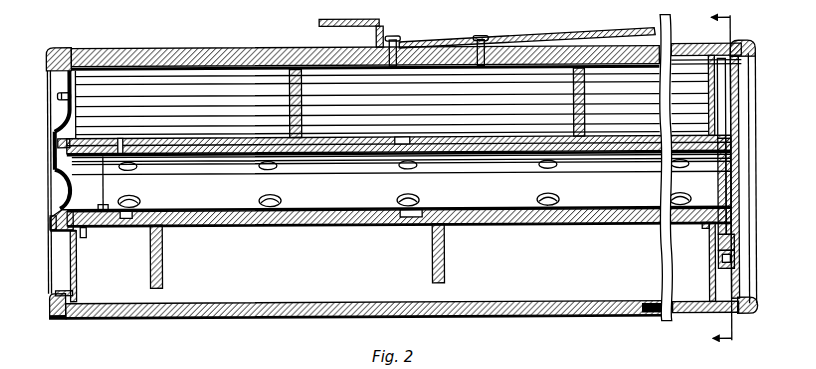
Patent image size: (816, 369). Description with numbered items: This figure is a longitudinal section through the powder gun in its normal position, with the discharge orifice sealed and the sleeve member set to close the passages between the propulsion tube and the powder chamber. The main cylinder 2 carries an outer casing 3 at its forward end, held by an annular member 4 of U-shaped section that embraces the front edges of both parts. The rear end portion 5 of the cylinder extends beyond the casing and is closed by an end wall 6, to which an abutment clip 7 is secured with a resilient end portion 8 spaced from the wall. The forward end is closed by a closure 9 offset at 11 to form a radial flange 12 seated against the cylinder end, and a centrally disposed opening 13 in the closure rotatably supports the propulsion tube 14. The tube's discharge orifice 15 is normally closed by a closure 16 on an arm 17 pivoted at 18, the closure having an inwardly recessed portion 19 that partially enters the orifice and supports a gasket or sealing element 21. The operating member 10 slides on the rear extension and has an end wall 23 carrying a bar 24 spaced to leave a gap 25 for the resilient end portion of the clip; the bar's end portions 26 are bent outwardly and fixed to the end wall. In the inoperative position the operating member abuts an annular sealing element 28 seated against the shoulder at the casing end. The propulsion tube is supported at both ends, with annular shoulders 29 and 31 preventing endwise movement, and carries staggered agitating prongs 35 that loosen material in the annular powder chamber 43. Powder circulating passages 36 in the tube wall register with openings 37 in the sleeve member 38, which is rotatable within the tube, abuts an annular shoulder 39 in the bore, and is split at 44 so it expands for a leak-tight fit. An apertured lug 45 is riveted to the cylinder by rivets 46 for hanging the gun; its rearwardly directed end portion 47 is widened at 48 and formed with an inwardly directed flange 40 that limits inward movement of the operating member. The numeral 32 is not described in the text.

The main cylinder 2 is at (357, 199).
The outer casing 3 is at (302, 320).
The annular member 4 is at (70, 320).
The rear end portion 5 is at (683, 302).
The end wall 6 is at (709, 260).
The abutment clip 7 is at (735, 259).
The resilient end portion 8 is at (735, 250).
The closure 9 is at (70, 283).
The operating member 10 is at (676, 42).
The offset 11 is at (56, 294).
The radial flange 12 is at (54, 320).
The centrally disposed opening 13 is at (62, 240).
The propulsion tube 14 is at (227, 229).
The discharge orifice 15 is at (62, 204).
The closure 16 is at (54, 157).
The arm 17 is at (56, 120).
The pivot 18 is at (57, 97).
The inwardly recessed portion 19 is at (62, 186).
The gasket or sealing element 21 is at (56, 230).
The end wall 23 is at (738, 160).
The bar 24 is at (727, 183).
The gap 25 is at (740, 197).
The end portions 26 is at (745, 99).
The annular sealing element 28 is at (645, 314).
The annular shoulder 29 is at (82, 236).
The annular shoulder 31 is at (704, 227).
The gasket 32 is at (57, 146).
The powder agitating fingers or prongs 35 is at (303, 115).
The powder circulating passages 36 is at (413, 138).
The openings 37 is at (126, 171).
The sleeve member 38 is at (322, 216).
The annular shoulder 39 is at (101, 213).
The inwardly directed flange 40 is at (700, 28).
The annular powder chamber 43 is at (186, 94).
The longitudinal split 44 is at (472, 164).
The apertured lug 45 is at (385, 20).
The rivets 46 is at (480, 38).
The rearwardly directed end portion 47 is at (548, 35).
The laterally widened portion 48 is at (657, 34).